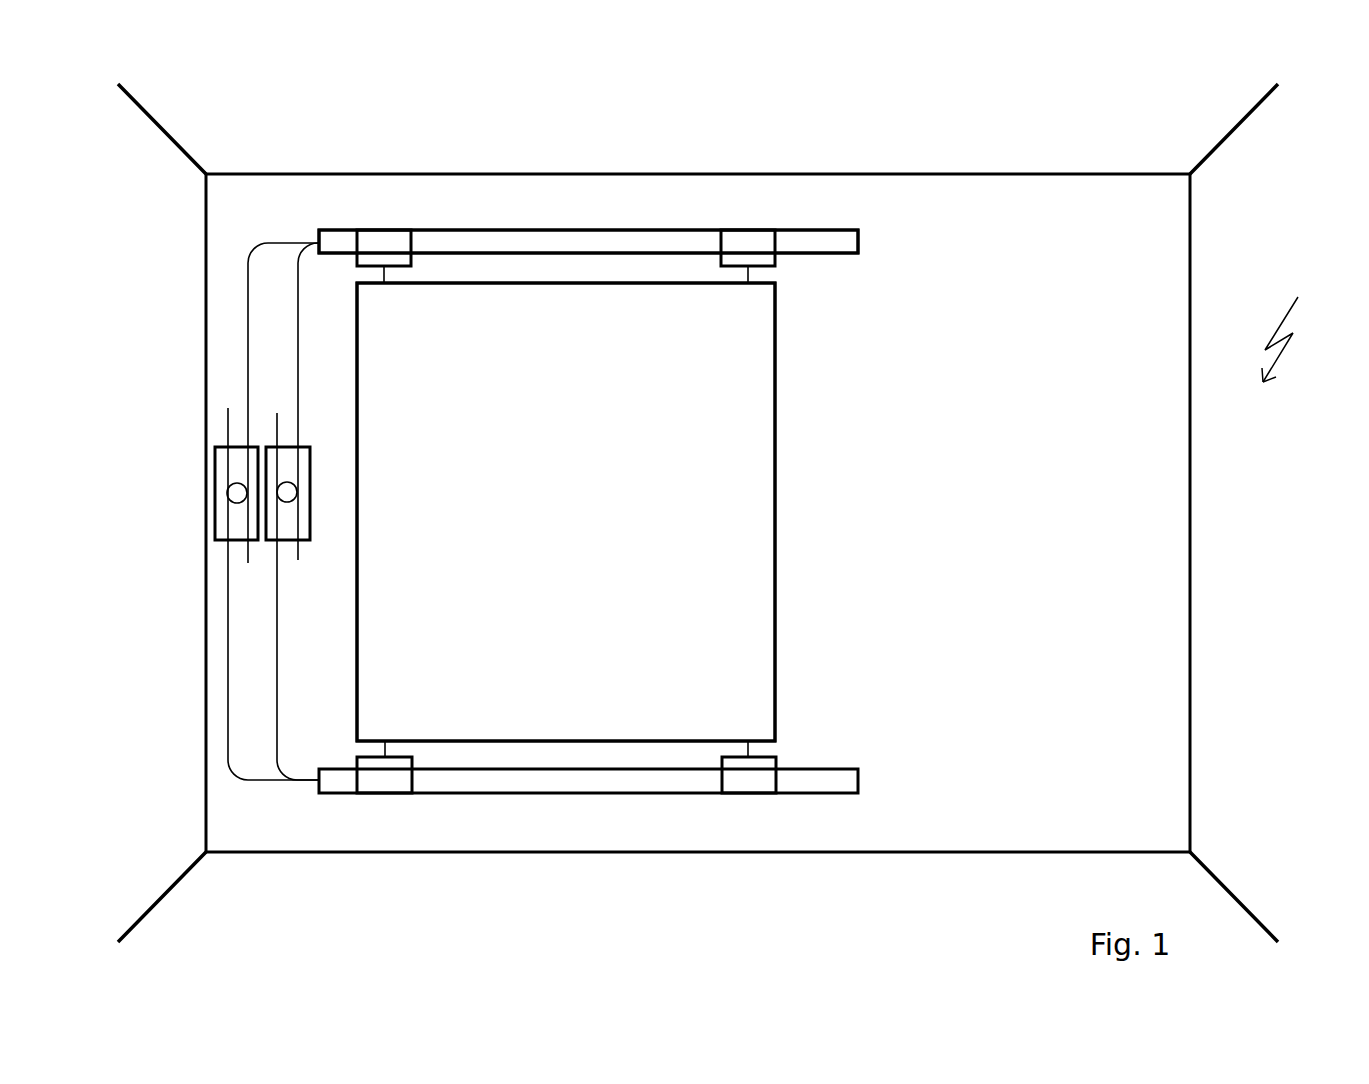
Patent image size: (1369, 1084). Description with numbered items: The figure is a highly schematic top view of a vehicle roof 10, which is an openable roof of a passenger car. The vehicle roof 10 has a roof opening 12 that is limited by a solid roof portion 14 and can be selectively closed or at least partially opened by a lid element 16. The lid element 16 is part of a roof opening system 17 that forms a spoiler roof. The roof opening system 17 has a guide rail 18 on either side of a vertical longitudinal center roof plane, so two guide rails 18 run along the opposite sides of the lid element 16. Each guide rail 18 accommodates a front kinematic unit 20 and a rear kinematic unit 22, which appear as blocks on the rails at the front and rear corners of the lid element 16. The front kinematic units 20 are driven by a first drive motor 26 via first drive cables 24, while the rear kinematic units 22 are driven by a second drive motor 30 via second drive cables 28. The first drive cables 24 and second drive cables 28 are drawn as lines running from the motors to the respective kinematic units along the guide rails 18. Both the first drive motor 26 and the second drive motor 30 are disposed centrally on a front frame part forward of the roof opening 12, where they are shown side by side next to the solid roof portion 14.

The vehicle roof 10 is at (1304, 329).
The roof opening 12 is at (452, 283).
The solid roof portion 14 is at (983, 514).
The lid element 16 is at (541, 521).
The roof opening system 17 is at (512, 220).
The guide rail 18 is at (587, 229).
The front kinematic unit 20 is at (382, 229).
The rear kinematic unit 22 is at (748, 229).
The first drive cable 24 is at (248, 352).
The first drive motor 26 is at (232, 495).
The second drive cable 28 is at (297, 322).
The second drive motor 30 is at (287, 490).